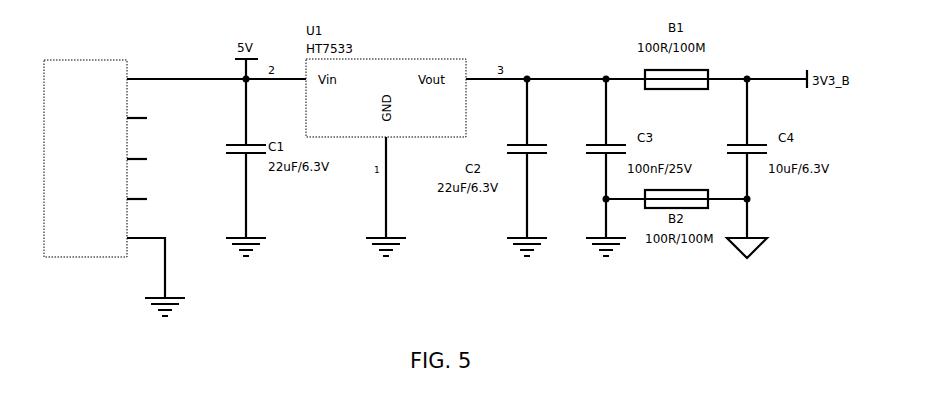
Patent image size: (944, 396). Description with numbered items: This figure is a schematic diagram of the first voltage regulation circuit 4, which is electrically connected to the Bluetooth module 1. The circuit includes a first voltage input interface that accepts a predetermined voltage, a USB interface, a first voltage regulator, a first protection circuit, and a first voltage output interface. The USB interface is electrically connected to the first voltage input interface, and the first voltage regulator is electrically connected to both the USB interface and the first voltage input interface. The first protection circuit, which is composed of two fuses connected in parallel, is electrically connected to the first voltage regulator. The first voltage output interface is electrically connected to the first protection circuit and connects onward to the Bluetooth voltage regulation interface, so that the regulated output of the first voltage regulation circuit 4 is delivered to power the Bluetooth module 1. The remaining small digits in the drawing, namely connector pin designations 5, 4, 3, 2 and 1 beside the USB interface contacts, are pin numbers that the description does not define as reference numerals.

The power supply module (micro USB connector CON1) 3 is at (180, 36).
The Vbus pin 5 is at (216, 71).
The first voltage regulation circuit 4 is at (145, 110).
The ID pin 2 is at (145, 191).
The Bluetooth module 1 is at (156, 269).